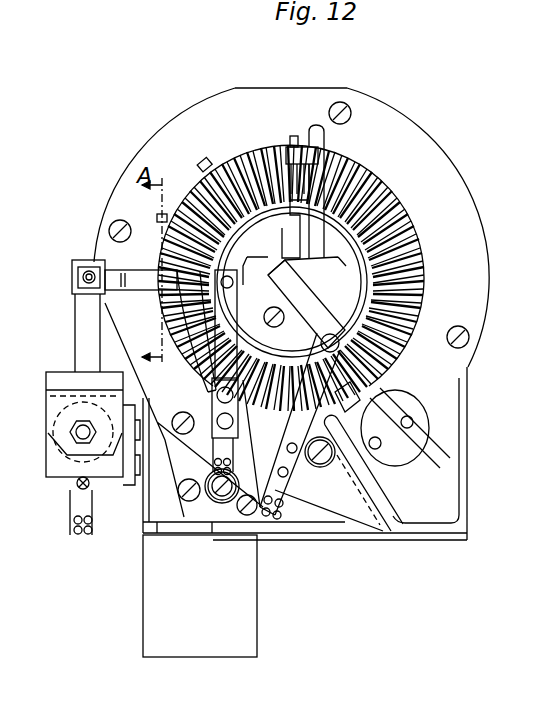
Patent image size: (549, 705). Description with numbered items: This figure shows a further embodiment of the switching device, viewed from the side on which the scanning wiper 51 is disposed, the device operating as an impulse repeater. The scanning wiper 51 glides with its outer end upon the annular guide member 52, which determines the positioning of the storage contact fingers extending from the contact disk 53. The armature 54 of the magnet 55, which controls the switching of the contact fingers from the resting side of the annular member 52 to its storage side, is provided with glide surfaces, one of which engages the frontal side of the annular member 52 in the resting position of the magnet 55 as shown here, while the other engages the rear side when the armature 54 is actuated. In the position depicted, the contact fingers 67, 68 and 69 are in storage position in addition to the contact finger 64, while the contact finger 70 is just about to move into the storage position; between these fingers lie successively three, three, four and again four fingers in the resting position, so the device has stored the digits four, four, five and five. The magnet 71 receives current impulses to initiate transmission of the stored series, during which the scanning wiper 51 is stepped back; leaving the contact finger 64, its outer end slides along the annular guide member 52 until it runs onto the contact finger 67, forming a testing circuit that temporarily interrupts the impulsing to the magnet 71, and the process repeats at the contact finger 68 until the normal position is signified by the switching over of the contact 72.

The scanning wiper 51 is at (318, 188).
The annular guide member 52 is at (375, 122).
The contact disk 53 is at (370, 174).
The armature 54 is at (86, 320).
The magnet 55 is at (63, 455).
The contact finger 64 is at (296, 133).
The contact finger 67 is at (242, 143).
The contact finger 68 is at (204, 160).
The contact finger 69 is at (157, 218).
The contact finger 70 is at (160, 263).
The magnet 71 is at (385, 425).
The contact 72 is at (222, 500).